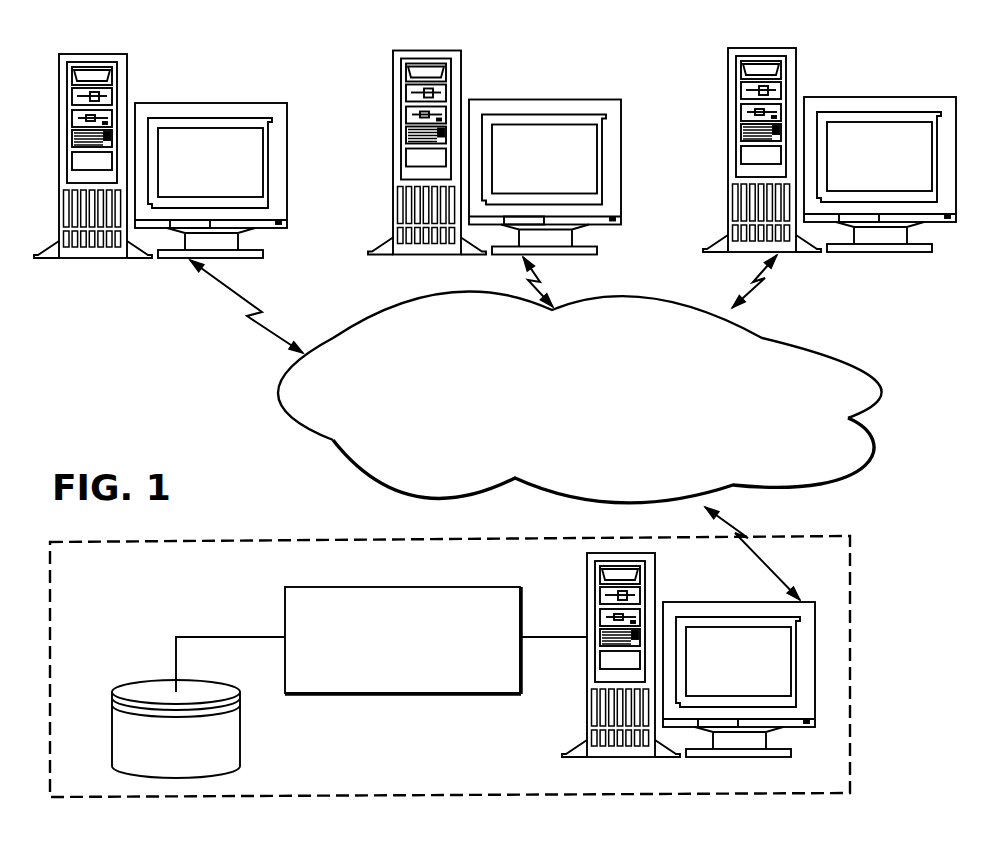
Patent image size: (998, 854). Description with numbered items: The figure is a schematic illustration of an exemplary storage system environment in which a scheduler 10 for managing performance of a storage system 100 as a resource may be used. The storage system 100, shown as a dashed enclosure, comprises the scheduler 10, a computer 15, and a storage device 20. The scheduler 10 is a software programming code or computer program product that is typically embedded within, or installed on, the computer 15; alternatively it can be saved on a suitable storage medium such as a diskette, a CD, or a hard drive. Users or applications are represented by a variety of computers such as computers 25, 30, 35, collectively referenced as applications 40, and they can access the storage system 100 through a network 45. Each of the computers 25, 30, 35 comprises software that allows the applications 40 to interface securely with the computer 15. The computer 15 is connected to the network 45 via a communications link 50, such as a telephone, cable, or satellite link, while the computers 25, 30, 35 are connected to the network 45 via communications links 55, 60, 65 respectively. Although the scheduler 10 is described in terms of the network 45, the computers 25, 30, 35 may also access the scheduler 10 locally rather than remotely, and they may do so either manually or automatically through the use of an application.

The scheduler 10 is at (285, 605).
The computer 15 is at (587, 588).
The storage device 20 is at (112, 710).
The computer 25 is at (59, 92).
The computer 30 is at (393, 86).
The computer 35 is at (728, 83).
The applications 40 is at (930, 278).
The network 45 is at (847, 347).
The communications link 50 is at (776, 570).
The communications link 55 is at (238, 292).
The communications link 60 is at (543, 290).
The communications link 65 is at (743, 298).
The storage system 100 is at (842, 536).